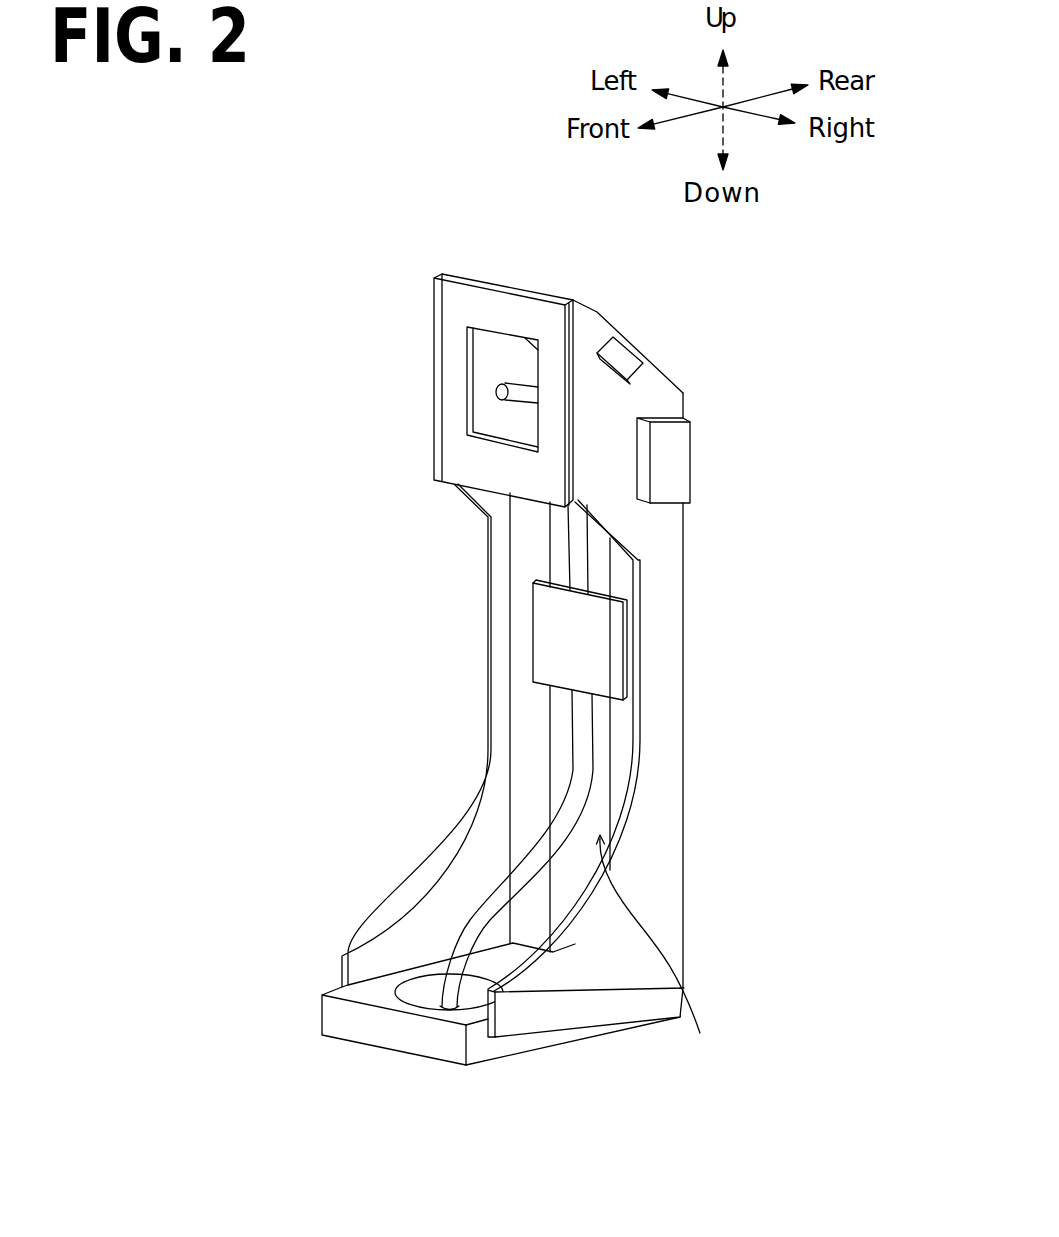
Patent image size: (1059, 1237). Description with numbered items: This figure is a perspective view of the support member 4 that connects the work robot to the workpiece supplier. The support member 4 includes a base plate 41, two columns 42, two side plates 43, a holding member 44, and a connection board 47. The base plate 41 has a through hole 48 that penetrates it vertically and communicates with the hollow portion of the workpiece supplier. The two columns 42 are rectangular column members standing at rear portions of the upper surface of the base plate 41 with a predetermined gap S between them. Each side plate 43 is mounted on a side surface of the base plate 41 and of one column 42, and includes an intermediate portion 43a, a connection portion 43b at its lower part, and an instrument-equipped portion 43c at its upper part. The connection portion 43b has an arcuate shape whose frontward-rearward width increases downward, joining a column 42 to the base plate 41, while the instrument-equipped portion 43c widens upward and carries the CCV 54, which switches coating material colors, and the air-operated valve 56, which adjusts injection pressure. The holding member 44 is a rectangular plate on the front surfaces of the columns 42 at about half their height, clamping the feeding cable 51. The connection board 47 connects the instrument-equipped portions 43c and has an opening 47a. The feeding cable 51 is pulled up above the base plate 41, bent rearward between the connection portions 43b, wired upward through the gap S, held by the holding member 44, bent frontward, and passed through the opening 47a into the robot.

The support member 4 is at (263, 534).
The base plate 41 is at (342, 1018).
The columns 42 is at (523, 717).
The side plates 43 is at (472, 816).
The intermediate portion 43a is at (680, 667).
The connection portion 43b is at (665, 920).
The instrument-equipped portion 43c is at (660, 391).
The holding member 44 is at (565, 633).
The connection board 47 is at (452, 362).
The opening 47a is at (492, 432).
The through hole 48 is at (415, 985).
The feeding cable 51 is at (515, 388).
The CCV 54 is at (673, 463).
The air-operated valve (AOPR) 56 is at (622, 357).
The gap S is at (657, 951).